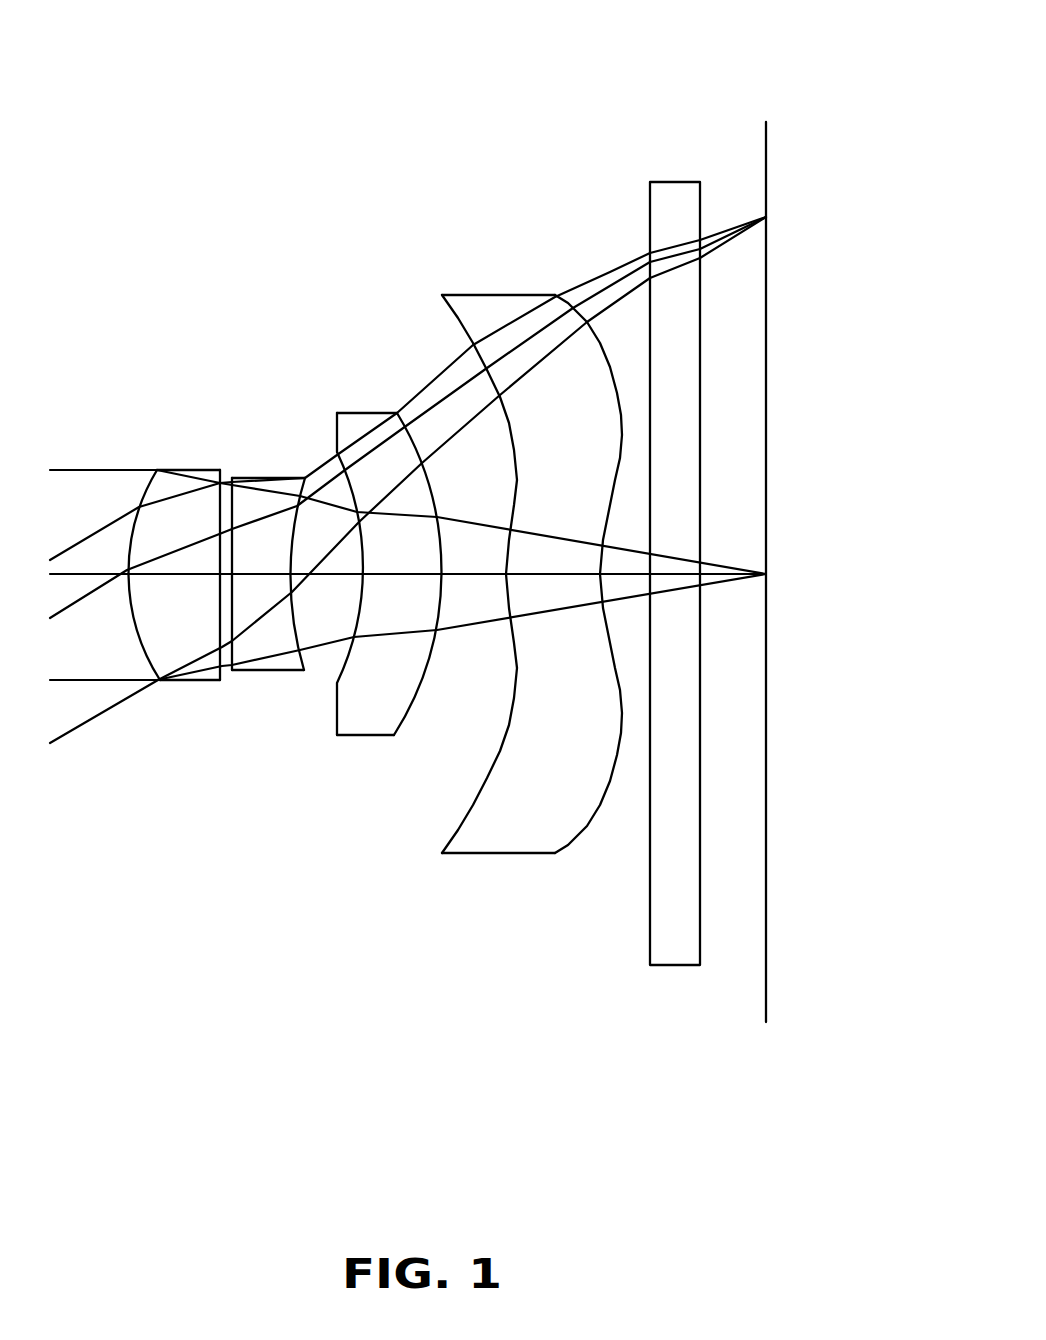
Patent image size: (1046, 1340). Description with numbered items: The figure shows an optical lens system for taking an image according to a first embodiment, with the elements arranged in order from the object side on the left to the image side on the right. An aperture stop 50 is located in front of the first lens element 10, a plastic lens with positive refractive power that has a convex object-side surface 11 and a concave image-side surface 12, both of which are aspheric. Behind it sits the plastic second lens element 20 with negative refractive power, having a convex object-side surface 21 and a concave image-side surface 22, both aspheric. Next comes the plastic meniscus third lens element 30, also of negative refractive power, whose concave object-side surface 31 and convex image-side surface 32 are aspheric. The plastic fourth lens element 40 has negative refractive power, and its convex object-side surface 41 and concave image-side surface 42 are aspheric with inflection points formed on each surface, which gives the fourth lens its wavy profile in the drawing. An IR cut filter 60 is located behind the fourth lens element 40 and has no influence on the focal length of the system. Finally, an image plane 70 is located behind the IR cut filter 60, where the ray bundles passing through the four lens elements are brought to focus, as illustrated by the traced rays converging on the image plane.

The first lens element 10 is at (142, 587).
The object-side surface of first lens element 11 is at (137, 643).
The image-side surface of first lens element 12 is at (218, 661).
The second lens element 20 is at (245, 578).
The object-side surface of second lens element 21 is at (232, 652).
The image-side surface of second lens element 22 is at (289, 624).
The third lens element 30 is at (377, 549).
The object-side surface of third lens element 31 is at (348, 678).
The image-side surface of third lens element 32 is at (420, 686).
The fourth lens element 40 is at (523, 576).
The object-side surface of fourth lens element 41 is at (467, 814).
The image-side surface of fourth lens element 42 is at (584, 830).
The aperture stop 50 is at (135, 488).
The IR cut filter 60 is at (671, 205).
The image plane 70 is at (763, 134).